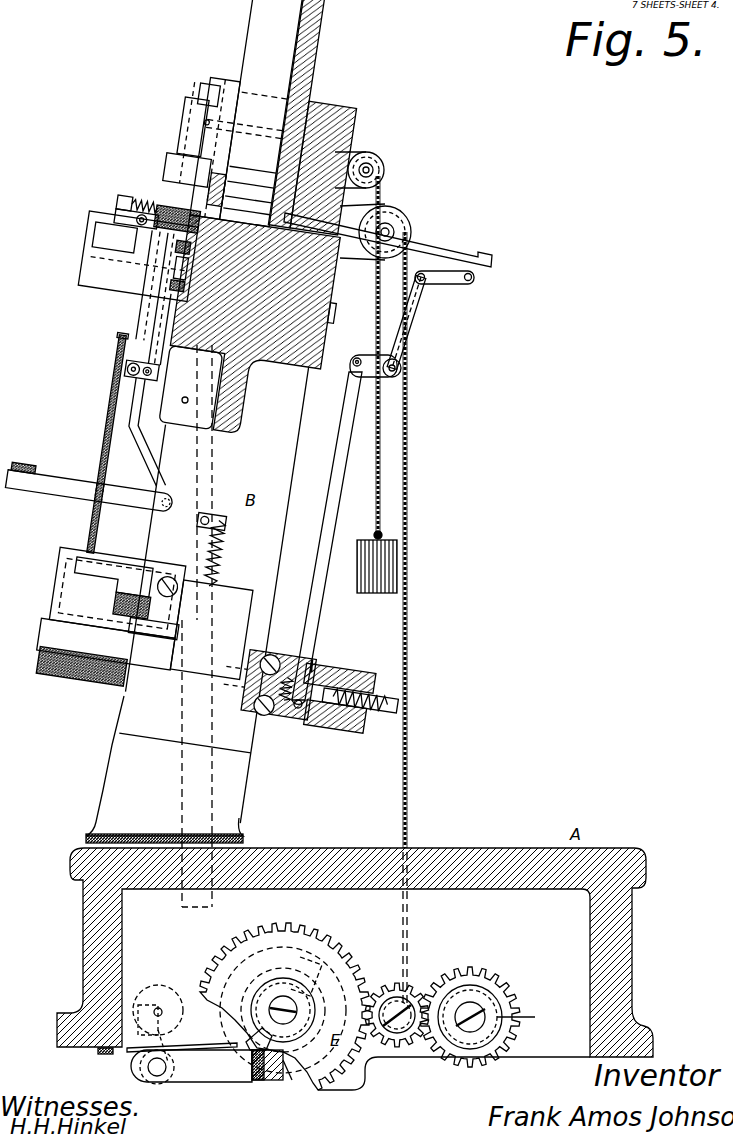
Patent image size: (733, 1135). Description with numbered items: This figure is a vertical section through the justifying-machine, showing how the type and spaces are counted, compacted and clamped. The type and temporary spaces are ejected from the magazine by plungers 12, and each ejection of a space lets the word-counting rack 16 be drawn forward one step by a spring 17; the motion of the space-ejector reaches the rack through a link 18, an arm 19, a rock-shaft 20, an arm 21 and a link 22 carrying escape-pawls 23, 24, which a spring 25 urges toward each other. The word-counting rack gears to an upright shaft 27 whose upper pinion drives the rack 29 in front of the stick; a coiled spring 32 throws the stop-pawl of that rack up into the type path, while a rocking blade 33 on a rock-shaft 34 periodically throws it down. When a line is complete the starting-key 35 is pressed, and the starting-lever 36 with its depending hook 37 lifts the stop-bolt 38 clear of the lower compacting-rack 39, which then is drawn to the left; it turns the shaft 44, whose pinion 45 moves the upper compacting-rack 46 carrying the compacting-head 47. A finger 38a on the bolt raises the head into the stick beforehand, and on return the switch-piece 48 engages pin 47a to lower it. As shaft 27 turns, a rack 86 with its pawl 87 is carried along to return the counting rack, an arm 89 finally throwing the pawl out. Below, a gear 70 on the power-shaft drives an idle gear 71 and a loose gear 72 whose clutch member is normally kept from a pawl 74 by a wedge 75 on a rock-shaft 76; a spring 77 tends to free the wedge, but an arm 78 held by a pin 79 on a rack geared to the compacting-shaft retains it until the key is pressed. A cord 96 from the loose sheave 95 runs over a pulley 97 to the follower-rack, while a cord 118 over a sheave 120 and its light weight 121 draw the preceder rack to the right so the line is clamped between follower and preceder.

The plungers 12 is at (367, 244).
The word-counting rack 16 is at (393, 710).
The spring 17 is at (375, 725).
The link 18 is at (452, 284).
The arm 19 is at (418, 326).
The rock-shaft 20 is at (402, 368).
The arm 21 is at (360, 368).
The link 22 is at (334, 450).
The escape-pawl 23 is at (325, 672).
The escape-pawl 24 is at (305, 720).
The spring 25 is at (278, 706).
The upright shaft 27 is at (96, 449).
The rack 29 is at (97, 240).
The coiled spring 32 is at (141, 208).
The rocking blade 33 is at (152, 236).
The rock-shaft 34 is at (117, 222).
The starting-key 35 is at (22, 462).
The starting-lever 36 is at (65, 493).
The depending hook 37 is at (200, 590).
The stop-bolt 38 is at (200, 447).
The finger 38a is at (160, 322).
The lower compacting-rack 39 is at (163, 637).
The shaft 44 is at (180, 780).
The pinion 45 is at (292, 270).
The upper compacting-rack 46 is at (179, 266).
The compacting-head 47 is at (185, 272).
The pin 47a is at (165, 290).
The switch-piece 48 is at (180, 283).
The gear 70 is at (497, 992).
The idle gear 71 is at (394, 988).
The gear 72 is at (210, 963).
The pawl 74 is at (270, 1076).
The wedge 75 is at (225, 1073).
The rock-shaft 76 is at (148, 1067).
The spring 77 is at (200, 1044).
The arm 78 is at (128, 1048).
The pin 79 is at (157, 1008).
The rack 86 is at (117, 565).
The pawl 87 is at (143, 620).
The arm 89 is at (122, 612).
The loose sheave 95 is at (148, 433).
The cord 96 is at (410, 818).
The pulley 97 is at (401, 224).
The cord 118 is at (384, 474).
The sheave 120 is at (386, 170).
The weight 121 is at (399, 570).